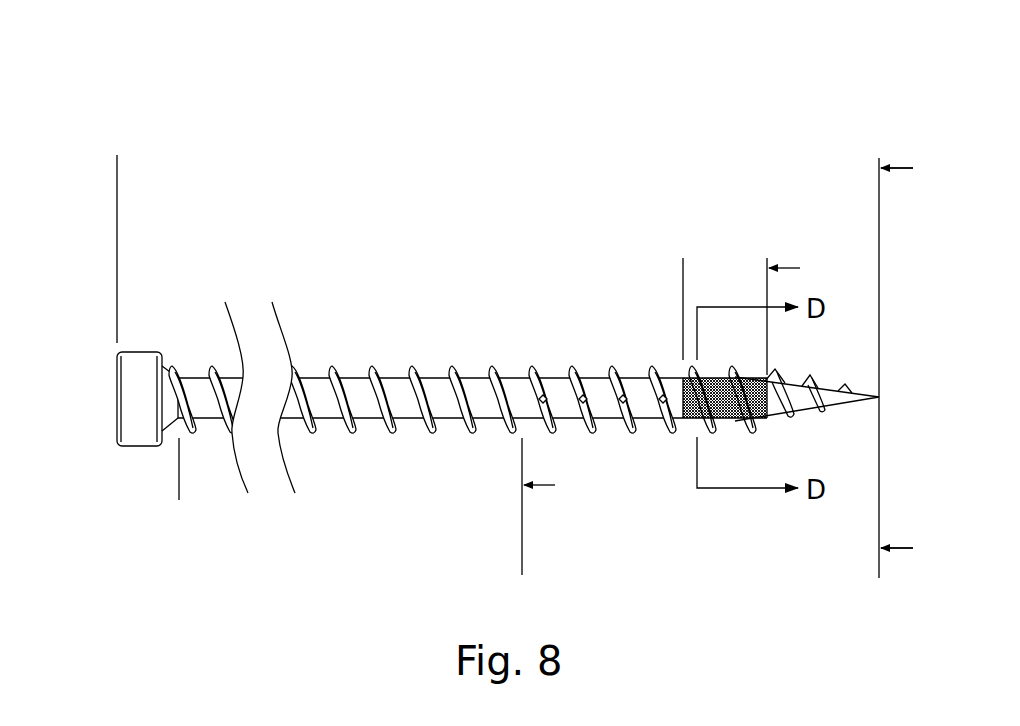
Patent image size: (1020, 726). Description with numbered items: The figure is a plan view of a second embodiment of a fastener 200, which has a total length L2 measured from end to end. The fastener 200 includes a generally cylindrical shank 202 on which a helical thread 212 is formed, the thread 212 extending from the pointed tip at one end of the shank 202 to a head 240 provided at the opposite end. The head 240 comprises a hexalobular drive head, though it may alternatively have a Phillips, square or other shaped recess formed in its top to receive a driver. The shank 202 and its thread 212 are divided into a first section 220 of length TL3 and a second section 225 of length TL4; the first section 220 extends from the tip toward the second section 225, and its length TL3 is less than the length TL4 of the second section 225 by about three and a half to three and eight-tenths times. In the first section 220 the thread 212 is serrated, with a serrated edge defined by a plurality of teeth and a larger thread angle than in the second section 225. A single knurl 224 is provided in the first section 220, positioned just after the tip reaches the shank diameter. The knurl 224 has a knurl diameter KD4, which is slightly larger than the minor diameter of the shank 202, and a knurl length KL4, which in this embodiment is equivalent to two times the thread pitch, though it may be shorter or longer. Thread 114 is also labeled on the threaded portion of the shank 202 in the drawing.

The fastener 200 is at (184, 130).
The head 240 is at (128, 422).
The thread 114 is at (327, 362).
The thread 212 is at (525, 366).
The shank 202 is at (592, 376).
The knurl 224 is at (710, 372).
The second section 225 is at (522, 500).
The first section 220 is at (879, 568).
The total length L2 is at (116, 166).
The length of second section TL4 is at (177, 485).
The total length of first section TL3 is at (520, 548).
The knurl length KL4 is at (681, 268).
The knurl diameter KD4 is at (717, 342).